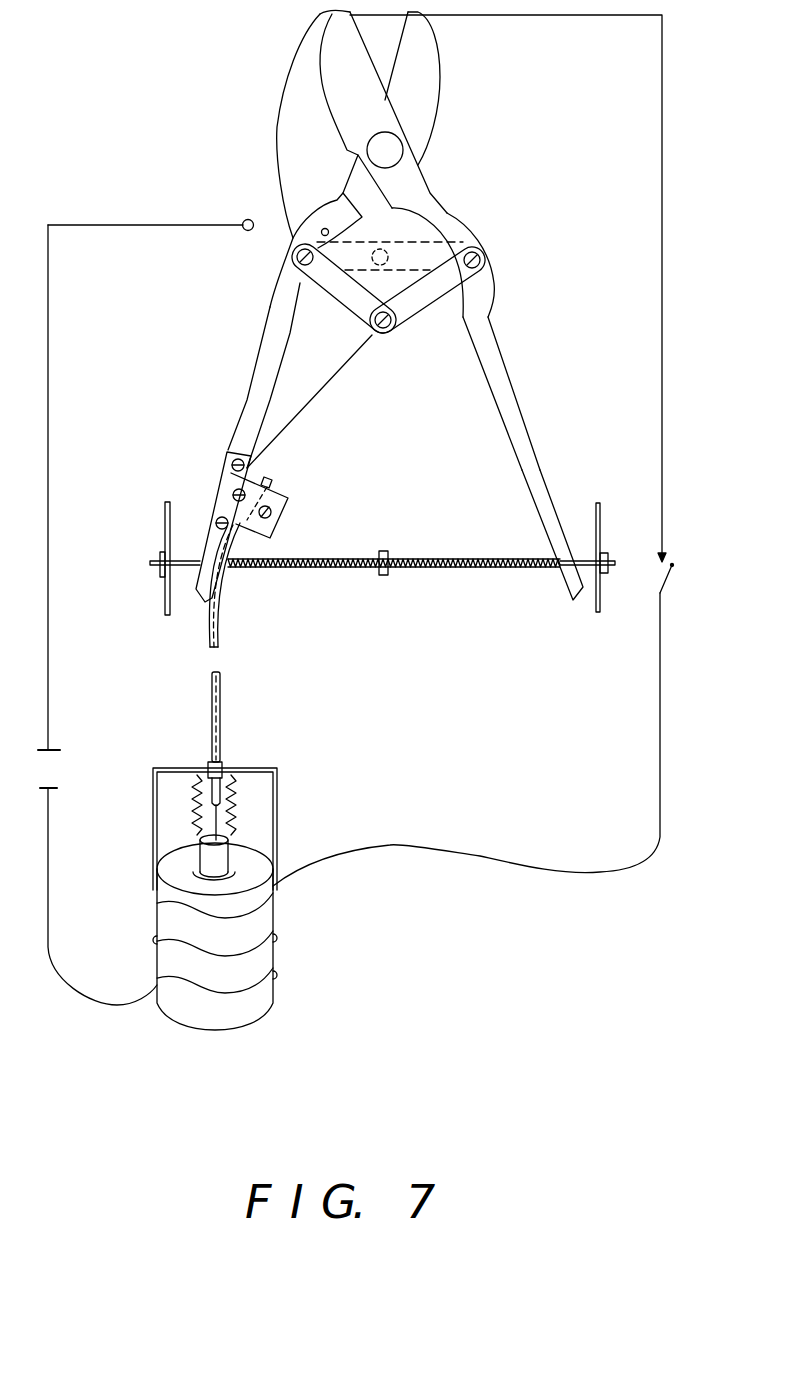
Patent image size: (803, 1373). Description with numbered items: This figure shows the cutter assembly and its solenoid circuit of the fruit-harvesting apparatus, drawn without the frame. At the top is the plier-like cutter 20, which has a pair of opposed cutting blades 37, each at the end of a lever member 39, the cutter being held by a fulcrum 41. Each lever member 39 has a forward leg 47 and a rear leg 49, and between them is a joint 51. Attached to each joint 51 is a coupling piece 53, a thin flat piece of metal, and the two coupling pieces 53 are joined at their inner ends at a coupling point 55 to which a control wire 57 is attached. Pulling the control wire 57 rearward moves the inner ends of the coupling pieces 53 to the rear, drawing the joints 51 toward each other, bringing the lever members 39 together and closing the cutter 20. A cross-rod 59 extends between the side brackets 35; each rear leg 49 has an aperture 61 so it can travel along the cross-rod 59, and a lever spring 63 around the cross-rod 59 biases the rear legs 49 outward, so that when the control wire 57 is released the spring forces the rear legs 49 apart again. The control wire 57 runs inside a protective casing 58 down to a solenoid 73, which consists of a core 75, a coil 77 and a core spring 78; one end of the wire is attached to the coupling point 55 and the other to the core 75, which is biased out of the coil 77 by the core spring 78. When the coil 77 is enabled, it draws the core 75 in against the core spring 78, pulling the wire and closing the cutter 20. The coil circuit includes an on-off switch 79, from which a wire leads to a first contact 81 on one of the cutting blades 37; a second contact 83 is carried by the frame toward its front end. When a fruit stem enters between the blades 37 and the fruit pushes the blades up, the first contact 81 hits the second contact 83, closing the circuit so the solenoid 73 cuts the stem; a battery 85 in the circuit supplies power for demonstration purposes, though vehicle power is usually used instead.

The plier-like cutter 20 is at (433, 83).
The cutting blades 37 is at (423, 32).
The fulcrum 41 is at (392, 150).
The forward leg 47 is at (460, 223).
The joint 51 is at (485, 257).
The coupling piece 53 is at (418, 300).
The coupling point 55 is at (380, 332).
The control wire 57 is at (293, 450).
The lever members 39 is at (508, 392).
The rear leg 49 is at (540, 488).
The side brackets 35 is at (165, 513).
The cross-rod 59 is at (182, 560).
The aperture 61 is at (558, 570).
The lever spring 63 is at (363, 570).
The protective casing 58 is at (222, 683).
The core spring 78 is at (198, 813).
The core 75 is at (222, 863).
The solenoid 73 is at (265, 922).
The coil 77 is at (237, 993).
The battery 85 is at (44, 769).
The second contact 83 is at (243, 222).
The first contact 81 is at (323, 228).
The on-off switch 79 is at (672, 577).